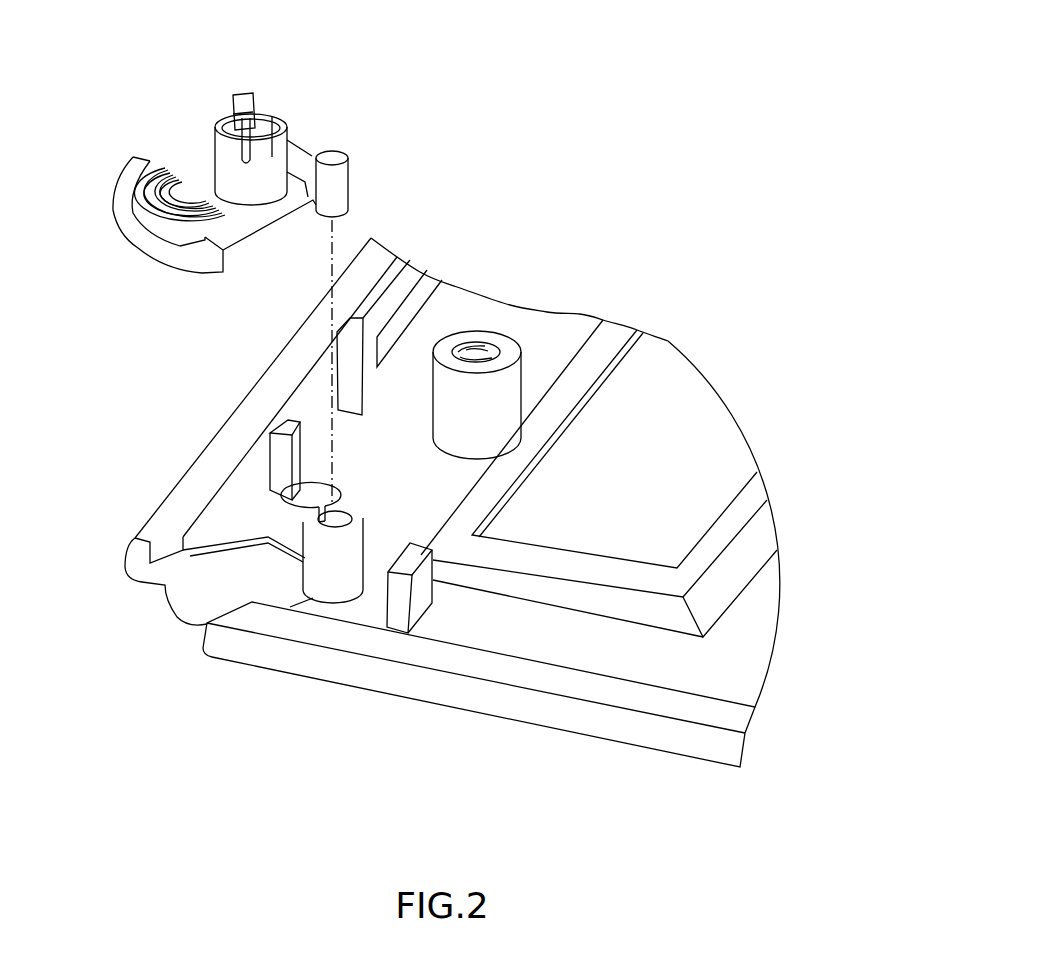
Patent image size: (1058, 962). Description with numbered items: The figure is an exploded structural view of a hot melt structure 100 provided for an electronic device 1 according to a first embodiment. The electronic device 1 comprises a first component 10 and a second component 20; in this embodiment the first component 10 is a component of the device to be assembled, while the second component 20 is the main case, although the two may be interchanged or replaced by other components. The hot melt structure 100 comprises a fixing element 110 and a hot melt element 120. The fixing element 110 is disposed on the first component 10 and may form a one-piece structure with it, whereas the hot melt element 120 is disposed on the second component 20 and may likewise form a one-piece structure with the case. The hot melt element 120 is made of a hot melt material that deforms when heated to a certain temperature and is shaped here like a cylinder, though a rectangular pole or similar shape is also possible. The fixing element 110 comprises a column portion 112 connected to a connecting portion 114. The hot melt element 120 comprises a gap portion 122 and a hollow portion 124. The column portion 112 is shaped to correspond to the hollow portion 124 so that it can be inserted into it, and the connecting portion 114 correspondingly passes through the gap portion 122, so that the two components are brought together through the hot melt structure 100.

The electronic device 1 is at (683, 123).
The first component 10 is at (132, 170).
The second component 20 is at (730, 665).
The hot melt structure 100 is at (130, 340).
The fixing element 110 is at (317, 228).
The column portion 112 is at (337, 157).
The connecting portion 114 is at (307, 150).
The hot melt element 120 is at (313, 582).
The gap portion 122 is at (310, 512).
The hollow portion 124 is at (325, 513).